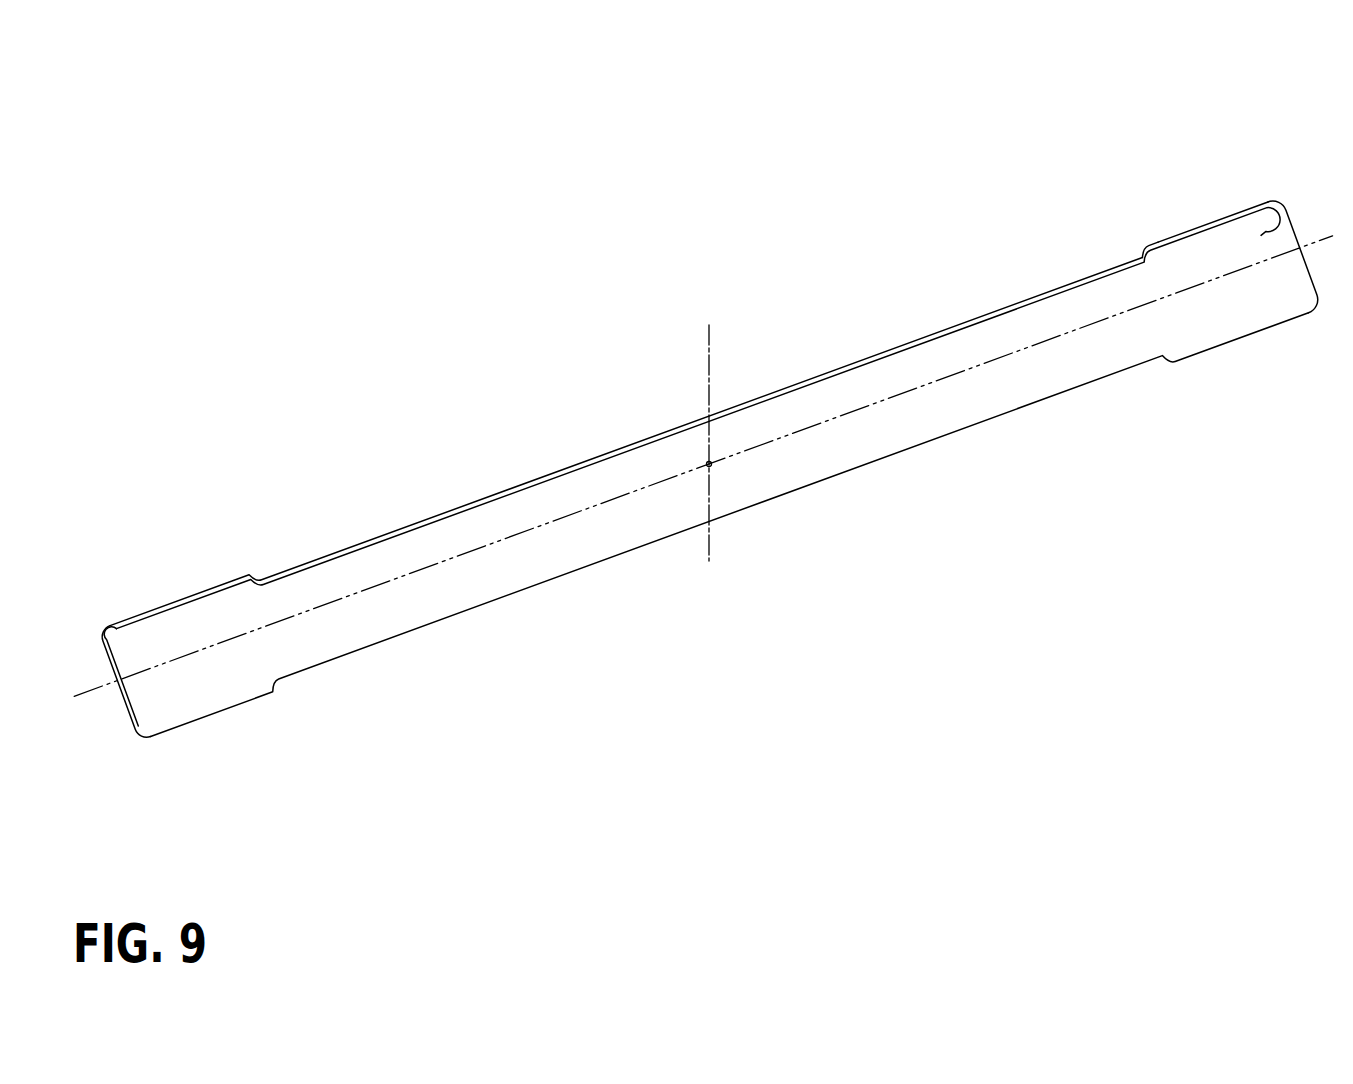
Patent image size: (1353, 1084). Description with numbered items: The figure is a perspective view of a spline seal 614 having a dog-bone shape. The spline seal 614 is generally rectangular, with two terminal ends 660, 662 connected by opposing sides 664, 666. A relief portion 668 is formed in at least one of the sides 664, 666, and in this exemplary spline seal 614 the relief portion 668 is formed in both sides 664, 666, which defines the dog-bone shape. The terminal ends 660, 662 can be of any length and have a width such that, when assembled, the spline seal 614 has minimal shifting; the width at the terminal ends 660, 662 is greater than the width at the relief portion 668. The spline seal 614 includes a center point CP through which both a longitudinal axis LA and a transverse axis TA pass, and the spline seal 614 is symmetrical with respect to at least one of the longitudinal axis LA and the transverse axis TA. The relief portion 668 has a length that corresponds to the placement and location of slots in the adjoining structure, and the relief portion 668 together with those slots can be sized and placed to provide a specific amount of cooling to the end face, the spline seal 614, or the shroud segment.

The spline seal 614 is at (330, 71).
The terminal end 660 is at (1297, 215).
The terminal end 662 is at (203, 620).
The side 664 is at (505, 489).
The side 666 is at (515, 593).
The relief portion 668 is at (1137, 253).
The transverse axis TA is at (712, 335).
The center point CP is at (713, 465).
The longitudinal axis LA is at (1322, 237).